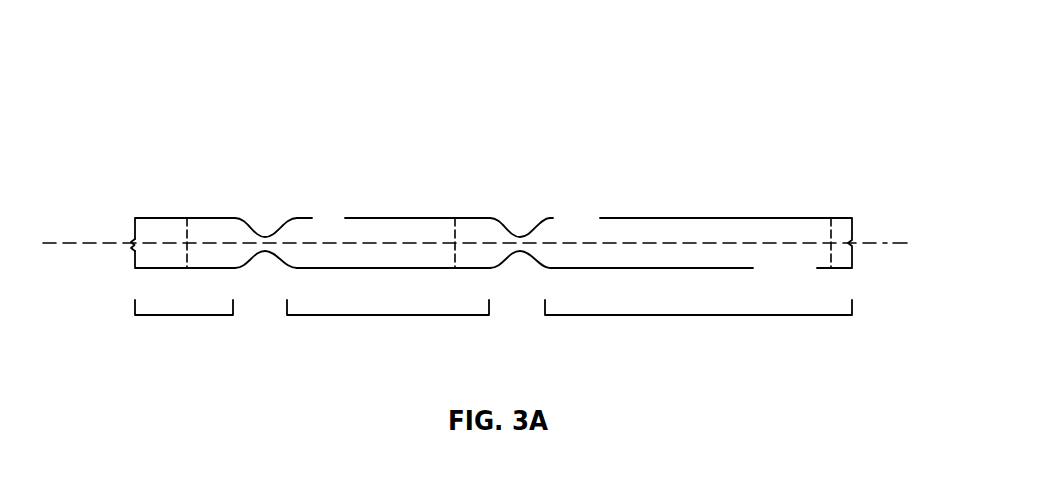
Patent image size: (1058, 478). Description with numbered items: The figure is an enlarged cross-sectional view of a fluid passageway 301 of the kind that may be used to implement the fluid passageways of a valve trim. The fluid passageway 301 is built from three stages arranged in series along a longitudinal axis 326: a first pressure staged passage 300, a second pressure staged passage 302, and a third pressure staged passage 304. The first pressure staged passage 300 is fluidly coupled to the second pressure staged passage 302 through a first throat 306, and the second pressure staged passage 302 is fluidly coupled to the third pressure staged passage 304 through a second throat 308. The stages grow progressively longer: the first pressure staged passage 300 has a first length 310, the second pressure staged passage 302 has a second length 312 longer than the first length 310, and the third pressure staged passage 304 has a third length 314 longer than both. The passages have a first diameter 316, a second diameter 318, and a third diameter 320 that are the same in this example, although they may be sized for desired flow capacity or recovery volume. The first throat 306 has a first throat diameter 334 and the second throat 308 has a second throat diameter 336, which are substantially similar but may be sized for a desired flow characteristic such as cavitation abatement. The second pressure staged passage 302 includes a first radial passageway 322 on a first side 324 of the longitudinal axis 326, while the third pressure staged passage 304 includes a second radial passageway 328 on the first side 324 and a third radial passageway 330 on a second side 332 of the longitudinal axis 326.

The first pressure staged passage 300 is at (158, 218).
The fluid passageway 301 is at (134, 116).
The second pressure staged passage 302 is at (380, 218).
The third pressure staged passage 304 is at (705, 218).
The first throat 306 is at (267, 236).
The second throat 308 is at (535, 237).
The first length 310 is at (193, 319).
The second length 312 is at (397, 316).
The third length 314 is at (693, 317).
The first diameter 316 is at (187, 249).
The second diameter 318 is at (453, 247).
The third diameter 320 is at (832, 243).
The first radial passageway 322 is at (328, 218).
The first side 324 is at (465, 232).
The longitudinal axis 326 is at (910, 243).
The second radial passageway 328 is at (575, 218).
The third radial passageway 330 is at (780, 267).
The second side 332 is at (91, 255).
The first throat diameter 334 is at (257, 250).
The second throat diameter 336 is at (514, 251).